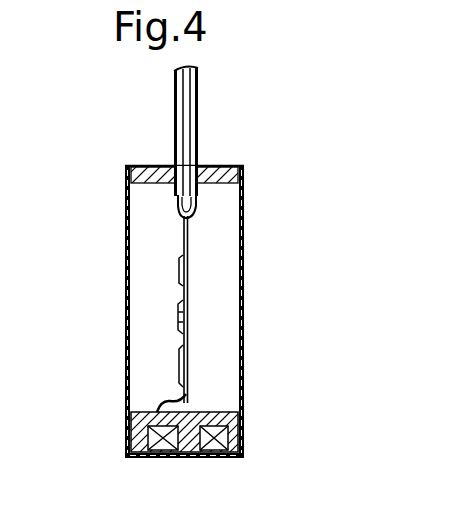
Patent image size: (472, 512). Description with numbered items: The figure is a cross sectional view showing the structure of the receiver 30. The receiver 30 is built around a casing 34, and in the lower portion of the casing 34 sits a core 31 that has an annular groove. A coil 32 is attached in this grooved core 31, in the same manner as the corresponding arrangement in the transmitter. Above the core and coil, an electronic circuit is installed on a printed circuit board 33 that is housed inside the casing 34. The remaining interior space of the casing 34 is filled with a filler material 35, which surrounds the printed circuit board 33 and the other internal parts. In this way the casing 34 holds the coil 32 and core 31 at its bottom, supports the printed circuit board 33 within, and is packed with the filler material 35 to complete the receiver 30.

The receiver 30 is at (257, 158).
The core 31 is at (186, 456).
The coil 32 is at (215, 457).
The printed circuit board 33 is at (189, 373).
The casing 34 is at (244, 229).
The filler material 35 is at (146, 279).